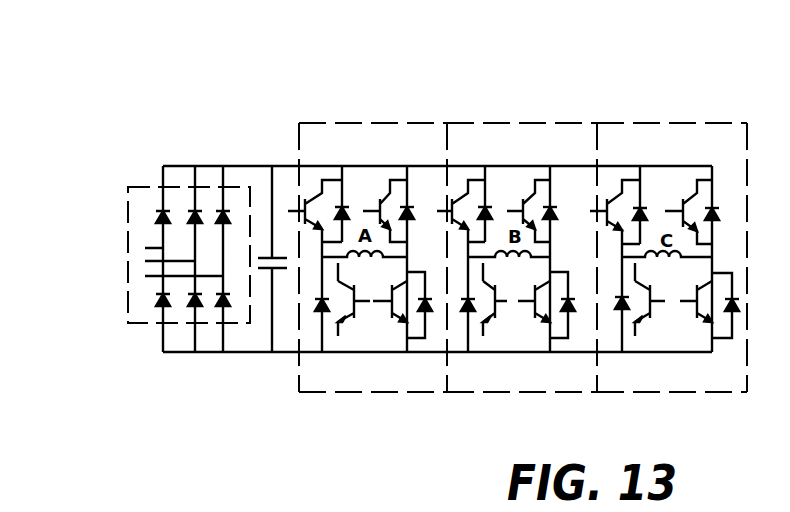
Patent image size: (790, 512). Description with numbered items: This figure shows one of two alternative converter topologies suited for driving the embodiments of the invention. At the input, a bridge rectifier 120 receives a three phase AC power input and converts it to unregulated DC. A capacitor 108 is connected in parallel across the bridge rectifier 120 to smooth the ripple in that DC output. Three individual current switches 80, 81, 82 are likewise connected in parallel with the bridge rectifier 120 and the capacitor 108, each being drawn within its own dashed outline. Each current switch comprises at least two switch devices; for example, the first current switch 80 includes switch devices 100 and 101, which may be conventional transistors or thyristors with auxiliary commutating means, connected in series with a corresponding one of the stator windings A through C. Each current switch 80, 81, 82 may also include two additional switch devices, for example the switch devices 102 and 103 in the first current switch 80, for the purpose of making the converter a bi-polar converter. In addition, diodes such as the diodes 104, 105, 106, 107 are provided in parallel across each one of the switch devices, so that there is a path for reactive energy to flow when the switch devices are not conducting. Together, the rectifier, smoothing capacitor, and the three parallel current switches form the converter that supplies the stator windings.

The bridge rectifier 120 is at (128, 187).
The capacitor 108 is at (280, 275).
The current switch 80 is at (418, 123).
The current switch 81 is at (513, 123).
The current switch 82 is at (676, 123).
The switch device 100 is at (297, 201).
The switch device 102 is at (367, 203).
The diode 104 is at (346, 199).
The diode 106 is at (412, 203).
The switch device 101 is at (383, 307).
The switch device 103 is at (358, 310).
The diode 105 is at (465, 316).
The diode 107 is at (318, 315).